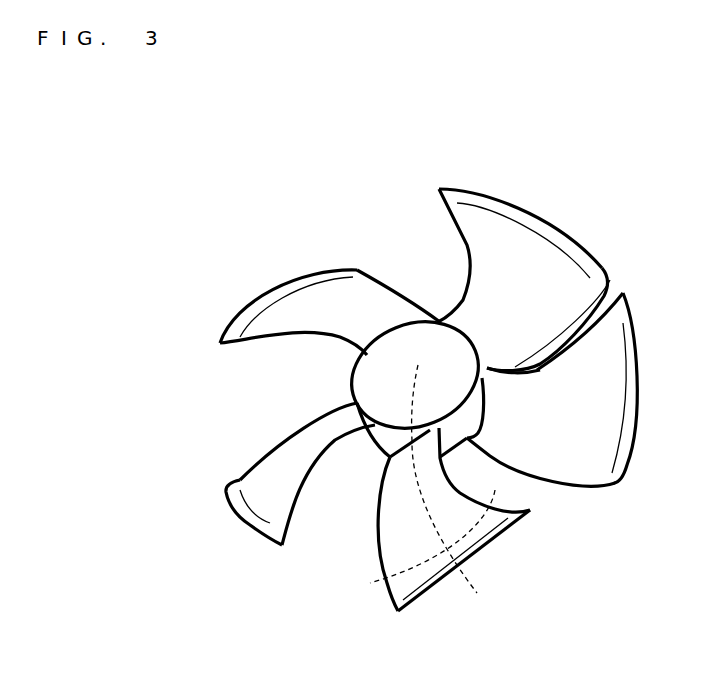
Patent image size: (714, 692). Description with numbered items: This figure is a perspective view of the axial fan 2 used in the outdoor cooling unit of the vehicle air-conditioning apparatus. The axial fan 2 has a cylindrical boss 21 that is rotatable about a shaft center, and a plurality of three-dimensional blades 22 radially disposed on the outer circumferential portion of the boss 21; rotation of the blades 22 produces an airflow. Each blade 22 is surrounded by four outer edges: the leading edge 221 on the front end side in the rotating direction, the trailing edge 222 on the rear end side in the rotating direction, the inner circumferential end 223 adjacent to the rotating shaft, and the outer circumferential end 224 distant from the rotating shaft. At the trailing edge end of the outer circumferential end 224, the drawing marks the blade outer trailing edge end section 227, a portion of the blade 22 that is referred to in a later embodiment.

The axial fan 2 is at (439, 672).
The boss 21 is at (427, 343).
The blade 22 is at (533, 260).
The leading edge 221 is at (462, 228).
The trailing edge 222 is at (585, 318).
The inner circumferential end 223 is at (475, 333).
The outer circumferential end 224 is at (580, 243).
The blade outer trailing edge end section 227 is at (605, 262).